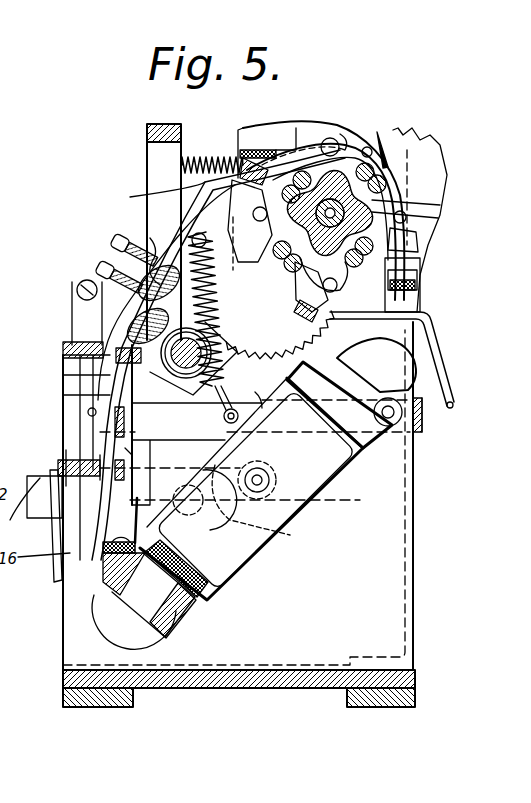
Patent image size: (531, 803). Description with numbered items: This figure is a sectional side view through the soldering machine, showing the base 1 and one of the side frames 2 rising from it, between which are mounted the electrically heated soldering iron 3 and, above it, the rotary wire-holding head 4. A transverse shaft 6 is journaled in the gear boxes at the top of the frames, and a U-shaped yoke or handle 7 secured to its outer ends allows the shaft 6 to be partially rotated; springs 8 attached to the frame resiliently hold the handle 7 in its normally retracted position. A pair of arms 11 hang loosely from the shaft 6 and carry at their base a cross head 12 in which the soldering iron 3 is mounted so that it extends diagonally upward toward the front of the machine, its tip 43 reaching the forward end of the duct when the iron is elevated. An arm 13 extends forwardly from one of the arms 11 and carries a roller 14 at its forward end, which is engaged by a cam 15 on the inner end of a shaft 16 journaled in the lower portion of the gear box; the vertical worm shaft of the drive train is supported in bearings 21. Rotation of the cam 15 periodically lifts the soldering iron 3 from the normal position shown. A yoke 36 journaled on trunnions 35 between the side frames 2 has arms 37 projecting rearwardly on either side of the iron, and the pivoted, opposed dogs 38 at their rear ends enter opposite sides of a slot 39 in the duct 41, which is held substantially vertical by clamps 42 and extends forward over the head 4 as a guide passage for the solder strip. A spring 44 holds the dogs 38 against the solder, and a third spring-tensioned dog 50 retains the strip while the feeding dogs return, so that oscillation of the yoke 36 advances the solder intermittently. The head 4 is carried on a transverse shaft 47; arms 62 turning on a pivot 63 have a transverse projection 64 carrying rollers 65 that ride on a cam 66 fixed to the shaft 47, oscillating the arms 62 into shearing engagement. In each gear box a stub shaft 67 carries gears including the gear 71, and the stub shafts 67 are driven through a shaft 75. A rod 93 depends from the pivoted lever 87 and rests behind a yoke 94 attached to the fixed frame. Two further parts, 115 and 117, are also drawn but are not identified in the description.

The base 1 is at (312, 688).
The side frames 2 is at (415, 513).
The soldering iron 3 is at (270, 548).
The rotary wire-holding head 4 is at (420, 207).
The shaft 6 is at (198, 298).
The yoke or handle 7 is at (147, 163).
The springs 8 is at (226, 160).
The arms 11 is at (133, 456).
The cross head 12 is at (103, 583).
The arm 13 is at (208, 470).
The roller 14 is at (270, 479).
The cam 15 is at (232, 489).
The shaft 16 is at (192, 516).
The bearings 21 is at (62, 452).
The trunnions 35 is at (392, 428).
The yoke 36 is at (424, 427).
The arms 37 is at (262, 393).
The dogs 38 is at (108, 428).
The slot 39 is at (92, 398).
The duct 41 is at (166, 291).
The clamps 42 is at (150, 238).
The tip 43 is at (445, 337).
The spring 44 is at (81, 408).
The transverse shaft 47 is at (372, 224).
The dog 50 is at (163, 366).
The arms 62 is at (306, 130).
The pivot 63 is at (334, 142).
The transverse projection 64 is at (402, 250).
The rollers 65 is at (300, 182).
The cam 66 is at (331, 300).
The stub shaft 67 is at (300, 302).
The gear 71 is at (284, 352).
The shaft 75 is at (180, 382).
The pivoted lever 87 is at (98, 273).
The rod 93 is at (76, 306).
The yoke 94 is at (50, 520).
The link 115 is at (220, 332).
The cam surface 117 is at (98, 598).